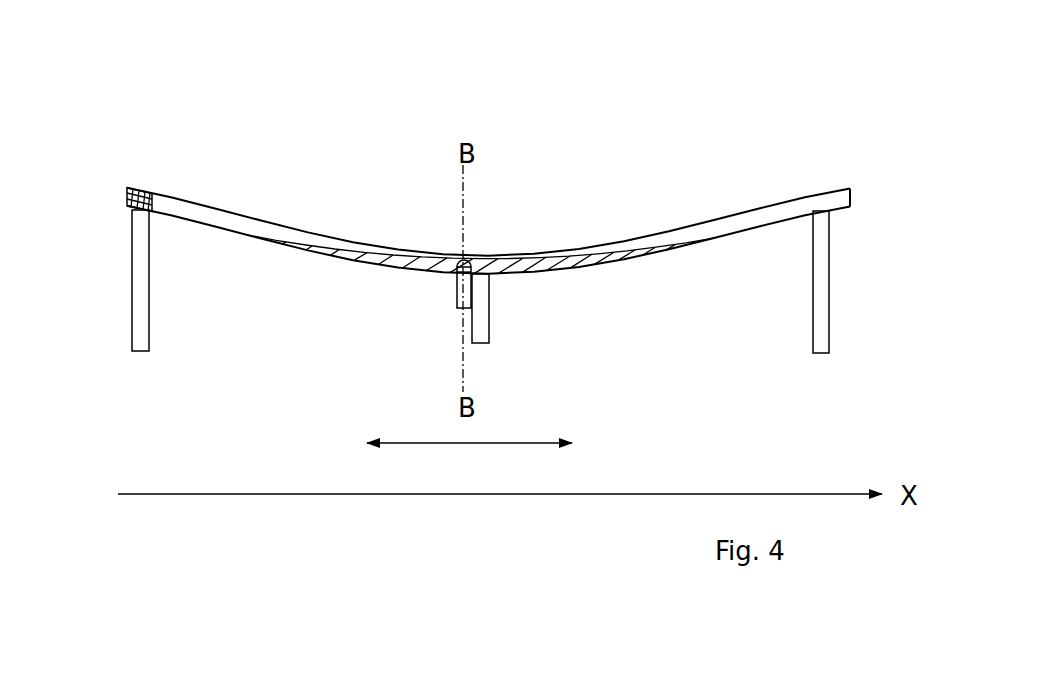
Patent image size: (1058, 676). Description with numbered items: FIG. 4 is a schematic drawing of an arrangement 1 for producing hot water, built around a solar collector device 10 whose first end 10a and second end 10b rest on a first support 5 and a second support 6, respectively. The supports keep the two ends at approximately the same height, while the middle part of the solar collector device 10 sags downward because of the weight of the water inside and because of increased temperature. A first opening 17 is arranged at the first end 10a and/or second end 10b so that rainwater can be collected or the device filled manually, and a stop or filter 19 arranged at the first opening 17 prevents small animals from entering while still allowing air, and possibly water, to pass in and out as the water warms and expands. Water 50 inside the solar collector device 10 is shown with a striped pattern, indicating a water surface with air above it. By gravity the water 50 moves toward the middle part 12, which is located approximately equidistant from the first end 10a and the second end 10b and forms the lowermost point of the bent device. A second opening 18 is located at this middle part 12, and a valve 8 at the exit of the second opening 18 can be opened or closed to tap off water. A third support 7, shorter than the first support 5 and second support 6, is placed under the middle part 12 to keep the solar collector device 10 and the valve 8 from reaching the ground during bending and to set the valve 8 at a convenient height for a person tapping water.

The apparatus 1 is at (370, 127).
The flexible beam / blade 10 is at (686, 225).
The first end of beam 10a is at (139, 180).
The second end of beam 10b is at (837, 167).
The force / clamping direction arrows 17 is at (118, 192).
The attachment point 19 is at (126, 189).
The reinforcing layer 50 is at (330, 258).
The recess / hole 18 is at (459, 265).
The pin 8 is at (457, 296).
The central support 7 is at (490, 310).
The left support 5 is at (133, 277).
The right support 6 is at (814, 315).
The displacement range 12 is at (469, 461).